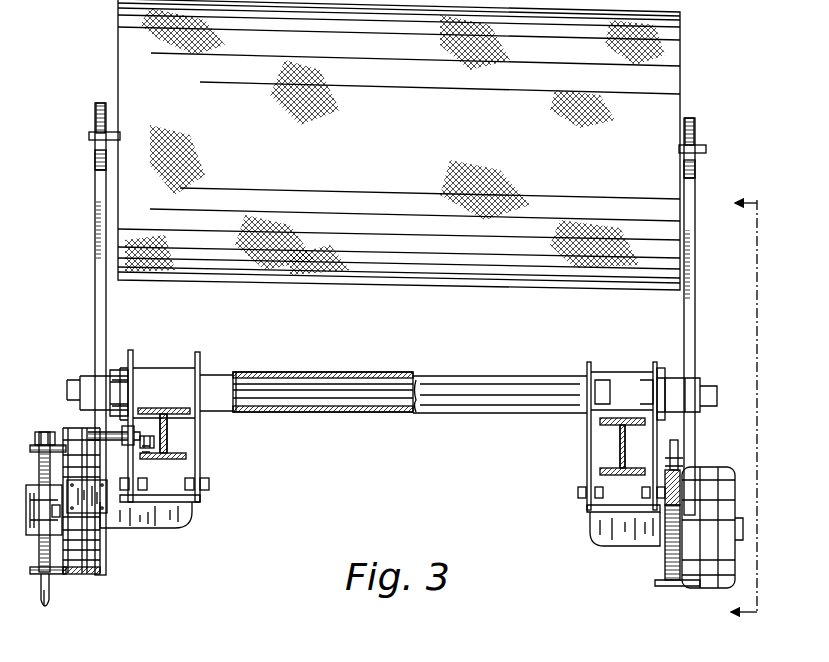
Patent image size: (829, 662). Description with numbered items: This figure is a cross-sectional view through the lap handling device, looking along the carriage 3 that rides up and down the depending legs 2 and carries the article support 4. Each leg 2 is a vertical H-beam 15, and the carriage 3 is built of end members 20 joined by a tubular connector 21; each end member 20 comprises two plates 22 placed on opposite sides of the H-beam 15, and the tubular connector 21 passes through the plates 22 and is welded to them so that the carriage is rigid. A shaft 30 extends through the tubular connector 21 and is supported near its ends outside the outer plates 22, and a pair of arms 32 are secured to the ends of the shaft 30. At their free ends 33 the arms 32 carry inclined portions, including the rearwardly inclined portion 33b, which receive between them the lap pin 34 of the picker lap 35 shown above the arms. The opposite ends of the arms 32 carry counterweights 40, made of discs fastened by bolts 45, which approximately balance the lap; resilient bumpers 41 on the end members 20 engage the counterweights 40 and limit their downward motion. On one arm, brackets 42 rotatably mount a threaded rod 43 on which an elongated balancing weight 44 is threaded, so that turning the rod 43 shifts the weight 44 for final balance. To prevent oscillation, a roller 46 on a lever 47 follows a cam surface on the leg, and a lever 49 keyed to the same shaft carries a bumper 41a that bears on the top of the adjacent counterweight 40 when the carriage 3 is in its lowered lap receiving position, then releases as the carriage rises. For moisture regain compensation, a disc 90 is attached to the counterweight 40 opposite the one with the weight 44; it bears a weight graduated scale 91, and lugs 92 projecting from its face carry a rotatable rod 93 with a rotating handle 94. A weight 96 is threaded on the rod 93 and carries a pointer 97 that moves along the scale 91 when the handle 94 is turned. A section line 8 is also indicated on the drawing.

The depending legs 2 is at (170, 442).
The carriage 3 is at (204, 476).
The article support 4 is at (398, 339).
The section line 8 is at (757, 406).
The H-beam 15 is at (186, 465).
The end member 20 is at (200, 500).
The tubular connector 21 is at (290, 372).
The plates 22 is at (655, 364).
The shaft 30 is at (365, 408).
The arms 32 is at (95, 300).
The ends of arms 33 is at (96, 160).
The rearwardly inclined portion 33b is at (97, 176).
The lap pin 34 is at (92, 138).
The picker lap 35 is at (353, 218).
The counterweights 40 is at (703, 590).
The resilient bumpers 41 is at (135, 527).
The bumper 41a is at (105, 513).
The brackets 42 is at (680, 462).
The threaded rod 43 is at (665, 566).
The elongated balancing weight 44 is at (668, 490).
The bolts 45 is at (150, 448).
The roller 46 is at (150, 442).
The lever 47 is at (148, 440).
The lever 49 is at (90, 434).
The disc 90 is at (82, 576).
The weight graduated scale 91 is at (27, 490).
The lugs 92 is at (40, 447).
The rotatable rod 93 is at (42, 556).
The rotating handle 94 is at (46, 606).
The weight 96 is at (31, 515).
The pointer 97 is at (52, 510).